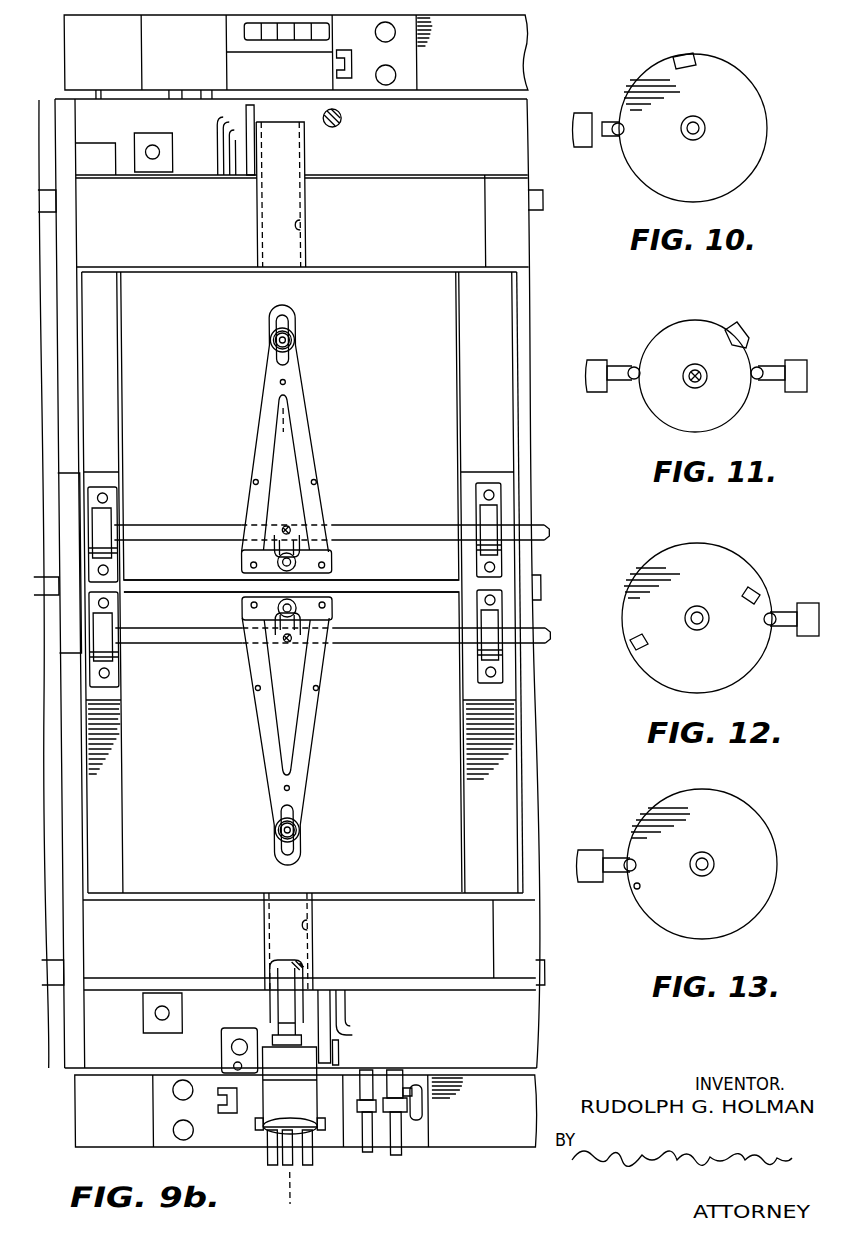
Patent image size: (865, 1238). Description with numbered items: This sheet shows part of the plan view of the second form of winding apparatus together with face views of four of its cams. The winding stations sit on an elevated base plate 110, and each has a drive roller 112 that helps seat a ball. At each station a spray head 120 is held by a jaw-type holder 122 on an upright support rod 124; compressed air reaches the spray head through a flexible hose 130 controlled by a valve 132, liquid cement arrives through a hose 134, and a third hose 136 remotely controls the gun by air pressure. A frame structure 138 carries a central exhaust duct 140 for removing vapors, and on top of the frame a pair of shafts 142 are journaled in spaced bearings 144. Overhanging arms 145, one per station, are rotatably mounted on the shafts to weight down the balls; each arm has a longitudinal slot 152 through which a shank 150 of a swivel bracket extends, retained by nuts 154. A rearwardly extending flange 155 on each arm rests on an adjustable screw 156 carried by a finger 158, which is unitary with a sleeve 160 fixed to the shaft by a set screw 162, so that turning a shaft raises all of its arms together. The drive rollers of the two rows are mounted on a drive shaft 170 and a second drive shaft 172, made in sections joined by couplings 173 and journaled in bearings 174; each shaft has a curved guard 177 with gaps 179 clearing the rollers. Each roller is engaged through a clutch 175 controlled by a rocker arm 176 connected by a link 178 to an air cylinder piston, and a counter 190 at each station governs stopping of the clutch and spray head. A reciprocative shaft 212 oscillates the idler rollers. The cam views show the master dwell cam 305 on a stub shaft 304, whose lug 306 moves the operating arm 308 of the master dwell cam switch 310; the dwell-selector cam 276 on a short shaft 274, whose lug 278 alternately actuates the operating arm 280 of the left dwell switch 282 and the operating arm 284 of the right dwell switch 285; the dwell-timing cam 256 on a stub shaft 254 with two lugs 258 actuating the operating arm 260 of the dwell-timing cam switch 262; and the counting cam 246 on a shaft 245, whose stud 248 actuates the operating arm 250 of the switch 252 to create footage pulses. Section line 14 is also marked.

In FIG. 9B, the section line 14 is at (281, 420).
In FIG. 9B, the base plate 110 is at (512, 1035).
In FIG. 9B, the drive roller 112 is at (298, 158).
In FIG. 9B, the spray head 120 is at (265, 965).
In FIG. 9B, the jaw-type holder 122 is at (243, 1025).
In FIG. 9B, the support rod 124 is at (342, 119).
In FIG. 9B, the flexible hose 130 is at (303, 1152).
In FIG. 9B, the valve 132 is at (416, 1095).
In FIG. 9B, the hose 134 is at (277, 1160).
In FIG. 9B, the third hose 136 is at (258, 1155).
In FIG. 9B, the frame structure 138 is at (110, 810).
In FIG. 9B, the central exhaust duct 140 is at (48, 528).
In FIG. 9B, the shaft 142 is at (427, 524).
In FIG. 9B, the bearing 144 is at (100, 520).
In FIG. 9B, the overhanging arm 145 is at (260, 420).
In FIG. 9B, the shank 150 is at (269, 339).
In FIG. 9B, the longitudinal slot 152 is at (289, 363).
In FIG. 9B, the nut 154 is at (290, 336).
In FIG. 9B, the flange 155 is at (312, 605).
In FIG. 9B, the adjustable screw 156 is at (292, 560).
In FIG. 9B, the finger 158 is at (287, 540).
In FIG. 9B, the sleeve 160 is at (281, 525).
In FIG. 9B, the set screw 162 is at (277, 528).
In FIG. 9B, the drive shaft 170 is at (48, 201).
In FIG. 9B, the second drive shaft 172 is at (41, 970).
In FIG. 9B, the coupling 173 is at (48, 236).
In FIG. 9B, the bearing 174 is at (154, 133).
In FIG. 9B, the clutch 175 is at (252, 174).
In FIG. 9B, the rocker arm 176 is at (332, 1035).
In FIG. 9B, the curved guard 177 is at (308, 579).
In FIG. 9B, the link 178 is at (240, 121).
In FIG. 9B, the gap 179 is at (303, 225).
In FIG. 9B, the counter 190 is at (245, 38).
In FIG. 9B, the reciprocative shaft 212 is at (536, 580).
In FIG. 13, the shaft 245 is at (716, 863).
In FIG. 13, the counting cam 246 is at (730, 820).
In FIG. 13, the stud 248 is at (639, 889).
In FIG. 13, the operating arm 250 is at (612, 857).
In FIG. 13, the switch 252 is at (592, 882).
In FIG. 12, the stub shaft 254 is at (700, 632).
In FIG. 12, the dwell-timing cam 256 is at (703, 557).
In FIG. 12, the lug 258 is at (758, 586).
In FIG. 12, the operating arm 260 is at (790, 608).
In FIG. 12, the dwell-timing cam switch 262 is at (805, 638).
In FIG. 11, the short shaft 274 is at (697, 388).
In FIG. 11, the dwell-selector cam 276 is at (695, 325).
In FIG. 11, the lug 278 is at (737, 337).
In FIG. 11, the operating arm 280 is at (620, 367).
In FIG. 11, the left dwell switch 282 is at (590, 365).
In FIG. 11, the operating arm 284 is at (770, 367).
In FIG. 11, the right dwell switch 285 is at (795, 385).
In FIG. 10, the stub shaft 304 is at (695, 140).
In FIG. 10, the master dwell cam 305 is at (740, 88).
In FIG. 10, the lug 306 is at (683, 54).
In FIG. 10, the operating arm 308 is at (604, 120).
In FIG. 10, the master dwell cam switch 310 is at (580, 118).